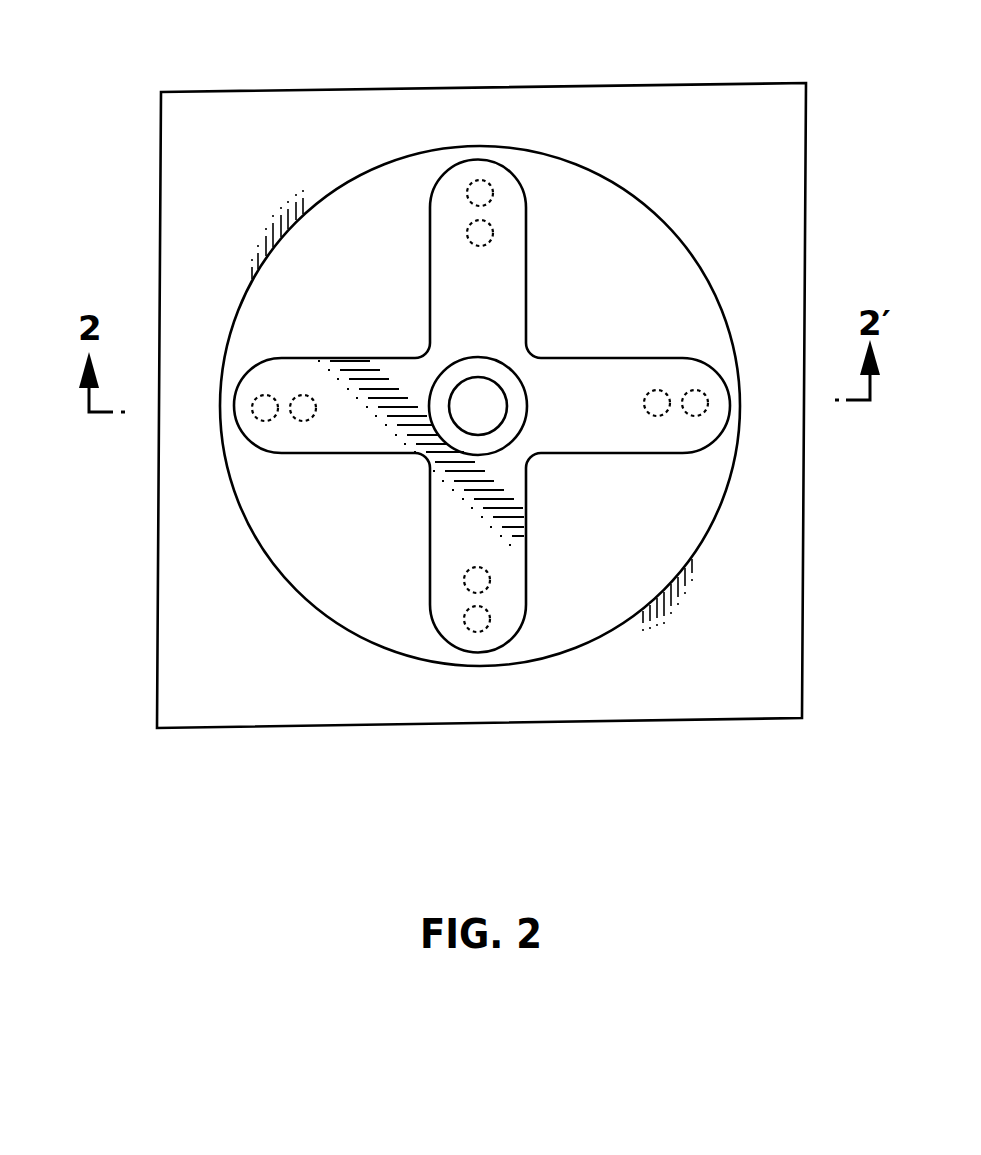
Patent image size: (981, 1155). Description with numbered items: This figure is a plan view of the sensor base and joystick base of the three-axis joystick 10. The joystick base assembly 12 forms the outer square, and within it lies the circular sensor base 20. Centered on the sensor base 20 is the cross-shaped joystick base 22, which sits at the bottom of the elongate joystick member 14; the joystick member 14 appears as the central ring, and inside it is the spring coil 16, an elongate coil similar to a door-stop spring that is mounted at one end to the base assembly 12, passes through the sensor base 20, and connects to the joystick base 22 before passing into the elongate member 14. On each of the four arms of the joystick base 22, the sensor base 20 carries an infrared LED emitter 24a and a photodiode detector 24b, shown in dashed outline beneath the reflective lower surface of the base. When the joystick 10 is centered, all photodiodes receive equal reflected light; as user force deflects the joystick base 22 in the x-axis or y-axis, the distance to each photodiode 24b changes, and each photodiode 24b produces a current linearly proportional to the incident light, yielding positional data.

The joystick 10 is at (768, 65).
The joystick base assembly 12 is at (795, 172).
The elongate joystick member 14 is at (458, 360).
The spring coil 16 is at (492, 380).
The sensor base 20 is at (597, 213).
The joystick base 22 is at (610, 365).
The LED emitter 24a is at (468, 190).
The photodiode detector 24b is at (493, 230).